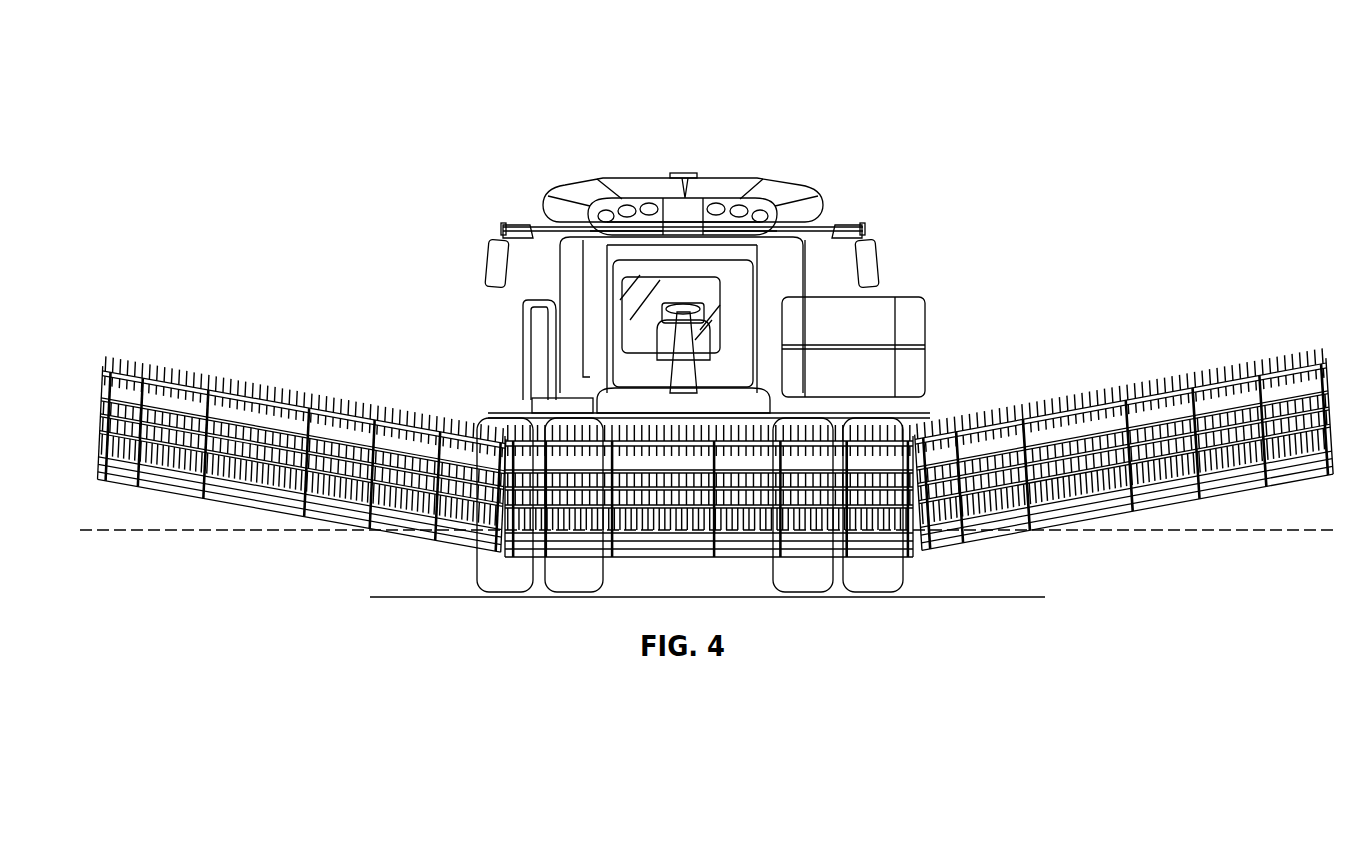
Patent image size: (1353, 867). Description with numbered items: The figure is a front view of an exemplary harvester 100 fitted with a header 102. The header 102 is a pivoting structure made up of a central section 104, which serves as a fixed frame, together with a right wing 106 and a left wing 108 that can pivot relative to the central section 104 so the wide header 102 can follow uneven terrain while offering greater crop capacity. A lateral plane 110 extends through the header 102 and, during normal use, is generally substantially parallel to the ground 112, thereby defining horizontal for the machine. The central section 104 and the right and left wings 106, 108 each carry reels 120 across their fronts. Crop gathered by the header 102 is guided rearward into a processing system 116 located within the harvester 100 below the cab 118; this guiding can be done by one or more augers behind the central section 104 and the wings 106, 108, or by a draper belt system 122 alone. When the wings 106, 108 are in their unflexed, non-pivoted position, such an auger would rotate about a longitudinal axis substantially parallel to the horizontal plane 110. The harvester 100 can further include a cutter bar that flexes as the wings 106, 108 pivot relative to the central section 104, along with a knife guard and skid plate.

The harvester 100 is at (1047, 90).
The header 102 is at (1000, 388).
The central section 104 is at (827, 402).
The right wing 106 is at (314, 314).
The left wing 108 is at (1202, 304).
The lateral plane 110 is at (1266, 527).
The ground 112 is at (1010, 590).
The processing system 116 is at (535, 405).
The cab 118 is at (540, 238).
The reels 120 is at (823, 440).
The draper belt system 122 is at (864, 490).